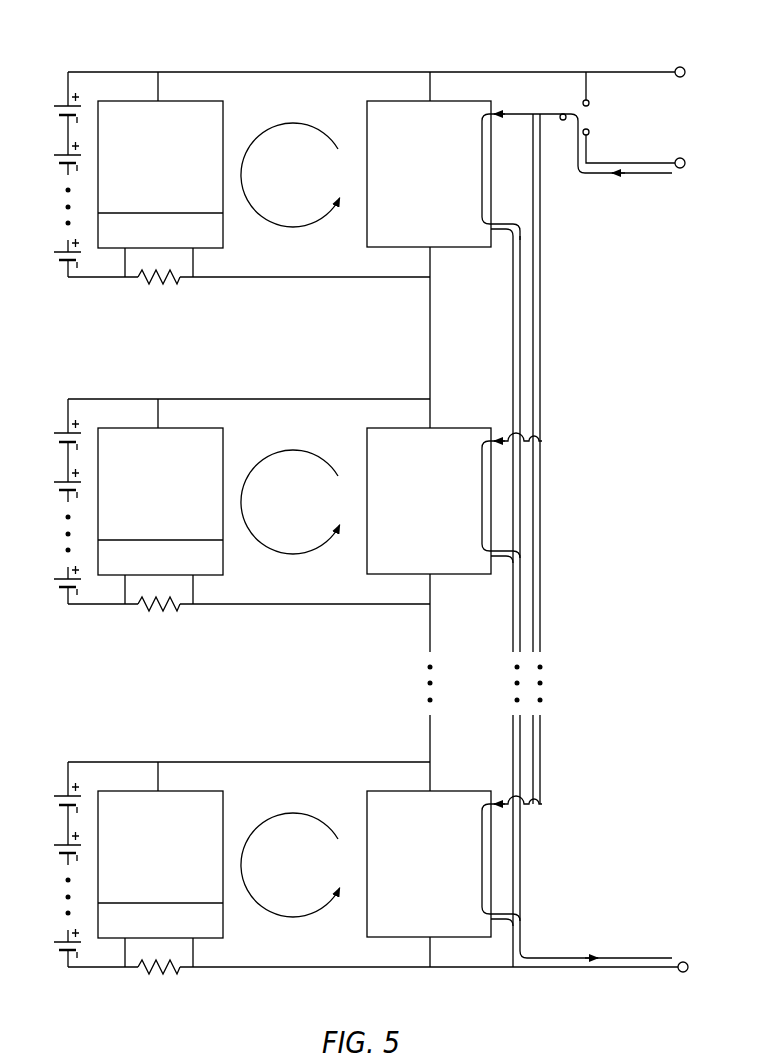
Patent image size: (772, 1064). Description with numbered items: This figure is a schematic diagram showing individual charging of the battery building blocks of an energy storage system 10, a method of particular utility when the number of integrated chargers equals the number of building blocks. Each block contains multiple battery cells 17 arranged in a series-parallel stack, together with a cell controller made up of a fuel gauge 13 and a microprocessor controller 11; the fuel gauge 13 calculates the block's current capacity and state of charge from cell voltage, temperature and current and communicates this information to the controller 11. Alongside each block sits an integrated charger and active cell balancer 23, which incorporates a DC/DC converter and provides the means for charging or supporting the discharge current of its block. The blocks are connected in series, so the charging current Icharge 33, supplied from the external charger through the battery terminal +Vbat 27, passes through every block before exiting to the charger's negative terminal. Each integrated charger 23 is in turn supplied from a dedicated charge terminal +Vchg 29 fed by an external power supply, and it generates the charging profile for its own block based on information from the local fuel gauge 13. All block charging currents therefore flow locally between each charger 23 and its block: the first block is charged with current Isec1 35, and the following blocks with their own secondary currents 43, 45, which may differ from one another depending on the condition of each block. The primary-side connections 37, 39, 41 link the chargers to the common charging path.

The battery system with series-connected battery building blocks 10 is at (80, 992).
The microprocessor controller 11 is at (133, 100).
The fuel gauge 13 is at (205, 248).
The battery cells 17 is at (50, 173).
The integrated charger and active cell balancer 23 is at (405, 100).
The ESS terminal +Vbat 27 is at (682, 77).
The dedicated charge terminal +Vchg 29 is at (682, 168).
The charging current Icharge 33 is at (490, 986).
The charging current Isec1 35 is at (296, 227).
The primary current line Ipri1 of block 1 37 is at (521, 118).
The primary current line Ipri2 of block 2 39 is at (487, 505).
The primary current line Iprin of block n 41 is at (488, 885).
The secondary current loop Isec2 of block 2 43 is at (296, 554).
The secondary current loop Isecn of block n 45 is at (296, 917).